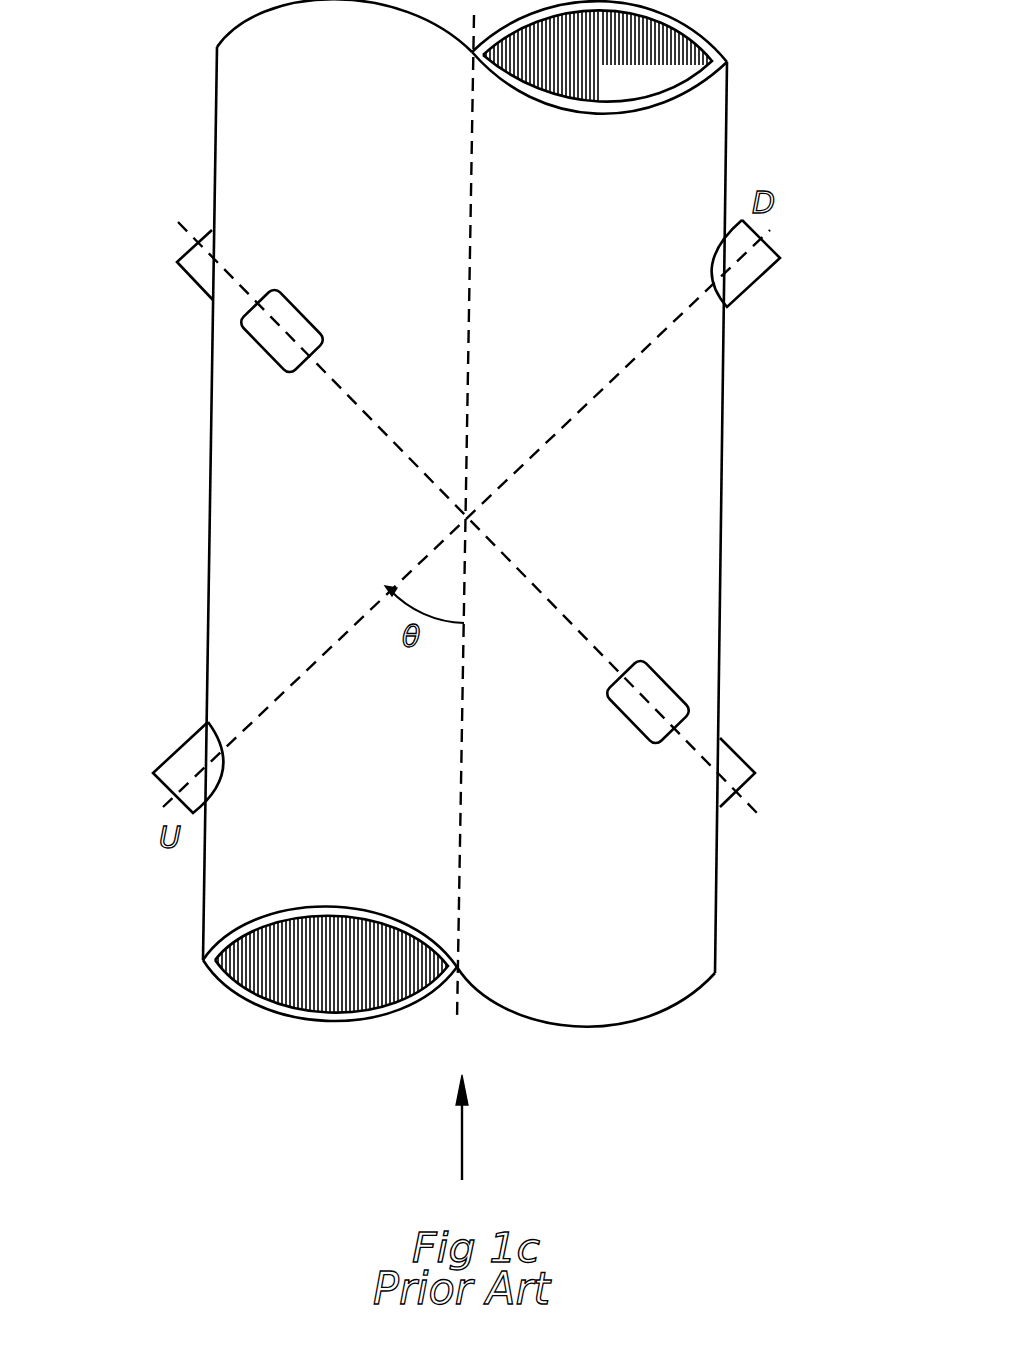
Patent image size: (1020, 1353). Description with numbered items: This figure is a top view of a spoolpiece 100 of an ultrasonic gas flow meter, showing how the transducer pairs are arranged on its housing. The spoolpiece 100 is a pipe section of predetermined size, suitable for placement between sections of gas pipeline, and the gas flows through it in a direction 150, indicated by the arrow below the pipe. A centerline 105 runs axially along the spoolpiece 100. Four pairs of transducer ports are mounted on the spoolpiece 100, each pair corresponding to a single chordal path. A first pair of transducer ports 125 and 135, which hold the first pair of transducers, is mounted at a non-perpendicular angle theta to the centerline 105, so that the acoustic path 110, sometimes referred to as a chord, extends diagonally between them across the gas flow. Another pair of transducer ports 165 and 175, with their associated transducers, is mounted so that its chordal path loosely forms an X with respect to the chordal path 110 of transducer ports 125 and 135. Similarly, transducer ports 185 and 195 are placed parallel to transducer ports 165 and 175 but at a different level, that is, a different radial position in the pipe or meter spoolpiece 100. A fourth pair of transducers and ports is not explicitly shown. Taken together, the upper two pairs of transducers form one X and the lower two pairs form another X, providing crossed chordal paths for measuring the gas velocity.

The spoolpiece 100 is at (728, 125).
The centerline 105 is at (472, 192).
The path 110 is at (593, 400).
The transducer port 125 is at (760, 280).
The transducer port 135 is at (175, 752).
The flow direction 150 is at (463, 1142).
The transducer port 165 is at (183, 275).
The transducer port 175 is at (743, 757).
The transducer port 185 is at (293, 305).
The transducer port 195 is at (620, 720).